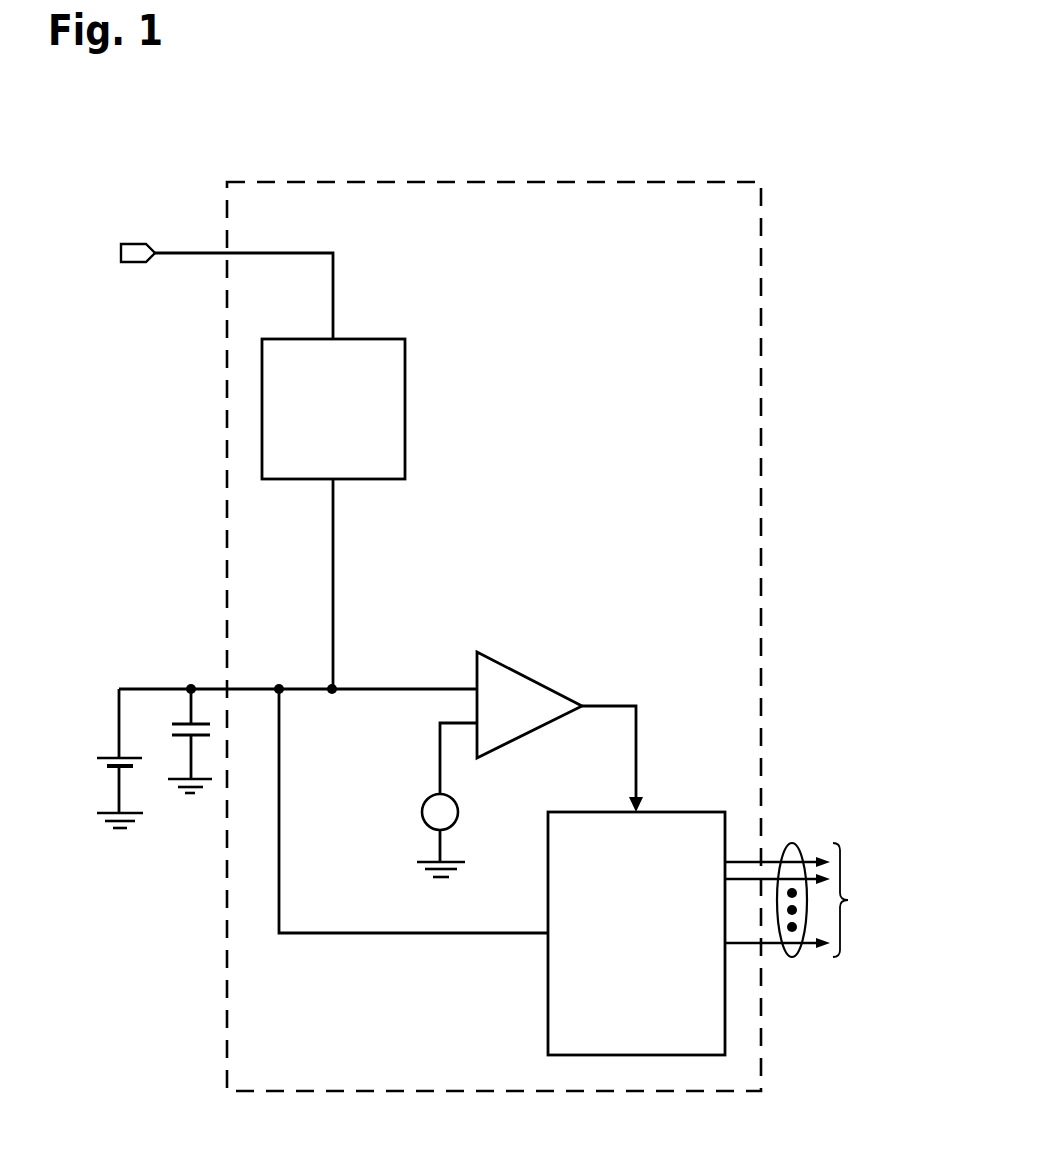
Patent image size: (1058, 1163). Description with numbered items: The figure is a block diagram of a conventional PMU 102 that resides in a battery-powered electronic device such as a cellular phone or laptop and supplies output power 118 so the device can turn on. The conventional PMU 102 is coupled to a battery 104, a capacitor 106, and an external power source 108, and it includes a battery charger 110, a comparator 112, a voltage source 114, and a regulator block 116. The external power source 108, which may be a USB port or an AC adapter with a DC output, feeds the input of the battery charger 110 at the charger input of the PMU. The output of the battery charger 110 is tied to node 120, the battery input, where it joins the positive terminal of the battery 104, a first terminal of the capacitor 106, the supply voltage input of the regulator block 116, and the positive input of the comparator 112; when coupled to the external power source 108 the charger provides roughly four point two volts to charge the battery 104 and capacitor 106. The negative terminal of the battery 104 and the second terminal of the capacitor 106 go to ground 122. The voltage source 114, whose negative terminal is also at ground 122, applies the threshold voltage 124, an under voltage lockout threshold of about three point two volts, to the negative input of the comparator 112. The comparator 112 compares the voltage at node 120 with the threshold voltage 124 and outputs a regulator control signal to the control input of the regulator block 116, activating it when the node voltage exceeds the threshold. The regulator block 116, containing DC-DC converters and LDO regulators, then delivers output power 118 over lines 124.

The conventional PMU 102 is at (617, 181).
The battery 104 is at (118, 757).
The capacitor 106 is at (188, 722).
The external power source 108 is at (135, 262).
The battery charger 110 is at (405, 392).
The comparator 112 is at (523, 670).
The voltage source 114 is at (458, 812).
The regulator block 116 is at (548, 982).
The output power 118 is at (827, 900).
The node 120 is at (281, 687).
The ground 122 is at (103, 812).
The threshold voltage 124 is at (418, 764).